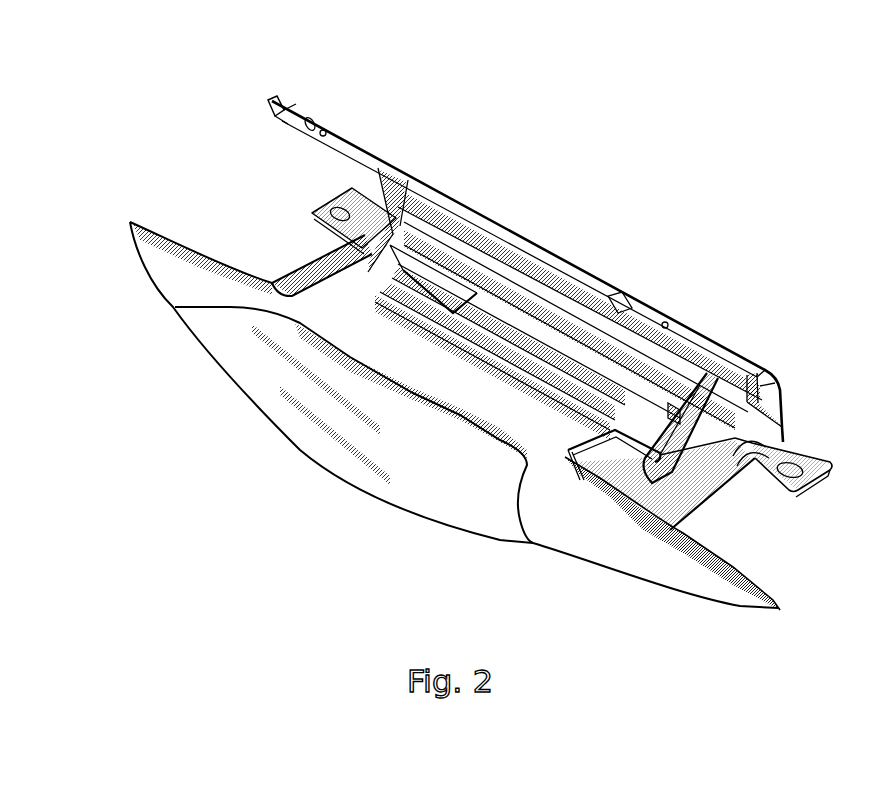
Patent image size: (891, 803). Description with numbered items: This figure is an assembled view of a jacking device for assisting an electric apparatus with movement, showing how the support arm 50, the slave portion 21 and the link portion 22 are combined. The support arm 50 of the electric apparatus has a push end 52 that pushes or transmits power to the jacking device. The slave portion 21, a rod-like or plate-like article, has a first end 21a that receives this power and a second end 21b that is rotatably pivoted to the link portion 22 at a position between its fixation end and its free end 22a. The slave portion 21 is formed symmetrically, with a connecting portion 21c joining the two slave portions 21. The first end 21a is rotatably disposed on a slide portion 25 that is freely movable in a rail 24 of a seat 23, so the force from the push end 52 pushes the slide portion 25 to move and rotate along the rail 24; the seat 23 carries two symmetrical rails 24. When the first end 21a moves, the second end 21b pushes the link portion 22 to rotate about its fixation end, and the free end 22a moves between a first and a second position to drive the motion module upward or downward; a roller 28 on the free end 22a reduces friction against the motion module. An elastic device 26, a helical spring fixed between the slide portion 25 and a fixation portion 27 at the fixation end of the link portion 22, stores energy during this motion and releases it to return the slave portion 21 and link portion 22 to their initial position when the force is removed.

The slave portion 21 is at (590, 297).
The first end 21a is at (637, 493).
The second end 21b is at (710, 365).
The connecting portion 21c is at (537, 260).
The link portion 22 is at (457, 175).
The free end 22a is at (330, 130).
The seat 23 is at (662, 327).
The rail 24 is at (322, 262).
The slide portion 25 is at (330, 240).
The elastic device 26 is at (345, 210).
The fixation portion 27 is at (792, 424).
The roller 28 is at (297, 100).
The support arm 50 is at (498, 452).
The push end 52 is at (490, 372).